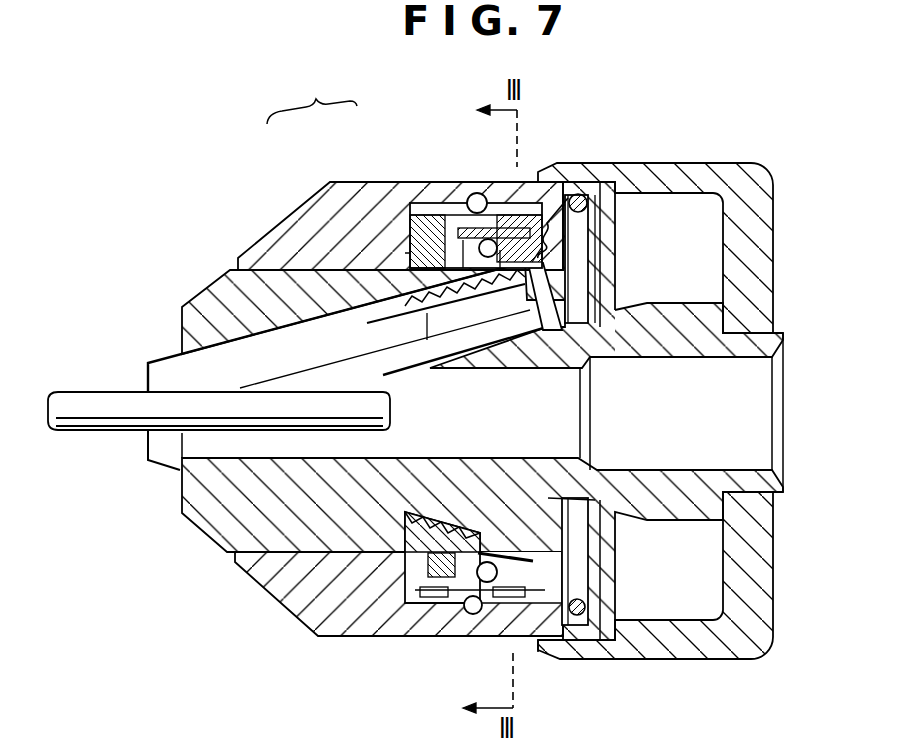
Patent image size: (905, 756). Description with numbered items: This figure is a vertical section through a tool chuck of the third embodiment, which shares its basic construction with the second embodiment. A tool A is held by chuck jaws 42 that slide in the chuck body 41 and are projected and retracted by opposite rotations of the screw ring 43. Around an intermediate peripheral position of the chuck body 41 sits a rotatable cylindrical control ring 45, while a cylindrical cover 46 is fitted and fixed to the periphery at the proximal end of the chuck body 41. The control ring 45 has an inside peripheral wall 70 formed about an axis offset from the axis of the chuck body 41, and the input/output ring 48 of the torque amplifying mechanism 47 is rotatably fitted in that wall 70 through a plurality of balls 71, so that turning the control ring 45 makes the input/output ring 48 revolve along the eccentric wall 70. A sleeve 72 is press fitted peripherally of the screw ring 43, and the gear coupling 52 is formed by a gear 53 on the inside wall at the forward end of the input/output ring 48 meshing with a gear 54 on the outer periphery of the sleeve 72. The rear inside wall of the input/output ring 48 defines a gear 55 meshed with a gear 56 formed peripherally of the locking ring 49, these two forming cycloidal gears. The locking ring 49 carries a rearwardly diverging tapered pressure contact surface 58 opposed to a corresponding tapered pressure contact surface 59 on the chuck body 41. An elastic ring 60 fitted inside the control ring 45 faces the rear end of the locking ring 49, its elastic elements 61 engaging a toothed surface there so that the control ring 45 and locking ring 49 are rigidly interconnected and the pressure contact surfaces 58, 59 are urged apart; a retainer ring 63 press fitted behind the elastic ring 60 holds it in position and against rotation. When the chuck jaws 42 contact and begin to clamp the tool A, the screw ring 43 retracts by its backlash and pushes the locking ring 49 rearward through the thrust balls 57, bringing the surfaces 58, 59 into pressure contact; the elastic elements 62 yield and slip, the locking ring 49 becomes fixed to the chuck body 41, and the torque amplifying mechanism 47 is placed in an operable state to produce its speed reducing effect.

The chuck body 41 is at (220, 520).
The chuck jaws 42 is at (170, 373).
The screw ring 43 is at (430, 357).
The control ring 45 is at (305, 607).
The cylindrical cover 46 is at (730, 170).
The torque amplifying mechanism 47 is at (463, 170).
The input/output ring 48 is at (423, 183).
The locking ring 49 is at (590, 200).
The gear coupling 52 is at (312, 96).
The gear 53 is at (383, 182).
The gear 54 is at (330, 181).
The gear 55 is at (520, 205).
The gear 56 is at (583, 182).
The thrust balls 57 is at (450, 607).
The tapered pressure contact surface 58 is at (533, 561).
The tapered pressure contact surface 59 is at (503, 562).
The elastic ring 60 is at (565, 592).
The elastic elements 61 is at (547, 613).
The elastic elements 62 is at (560, 560).
The retainer ring 63 is at (593, 623).
The inside peripheral wall 70 is at (410, 605).
The balls 71 is at (470, 616).
The sleeve 72 is at (405, 253).
The tool A is at (110, 400).